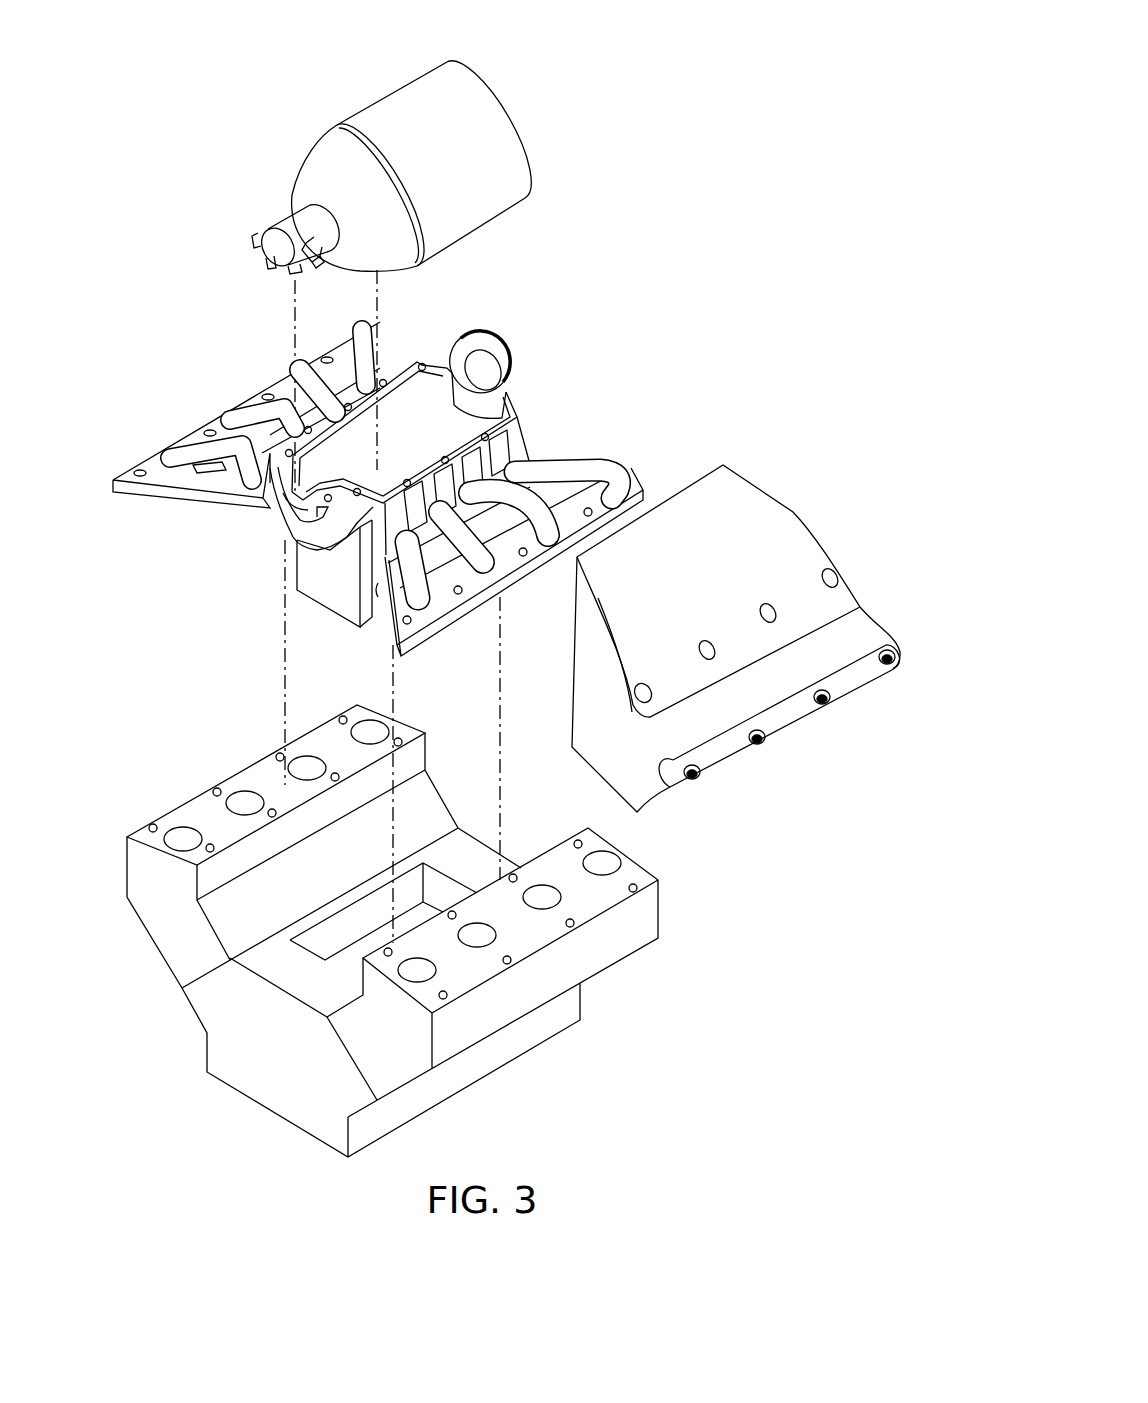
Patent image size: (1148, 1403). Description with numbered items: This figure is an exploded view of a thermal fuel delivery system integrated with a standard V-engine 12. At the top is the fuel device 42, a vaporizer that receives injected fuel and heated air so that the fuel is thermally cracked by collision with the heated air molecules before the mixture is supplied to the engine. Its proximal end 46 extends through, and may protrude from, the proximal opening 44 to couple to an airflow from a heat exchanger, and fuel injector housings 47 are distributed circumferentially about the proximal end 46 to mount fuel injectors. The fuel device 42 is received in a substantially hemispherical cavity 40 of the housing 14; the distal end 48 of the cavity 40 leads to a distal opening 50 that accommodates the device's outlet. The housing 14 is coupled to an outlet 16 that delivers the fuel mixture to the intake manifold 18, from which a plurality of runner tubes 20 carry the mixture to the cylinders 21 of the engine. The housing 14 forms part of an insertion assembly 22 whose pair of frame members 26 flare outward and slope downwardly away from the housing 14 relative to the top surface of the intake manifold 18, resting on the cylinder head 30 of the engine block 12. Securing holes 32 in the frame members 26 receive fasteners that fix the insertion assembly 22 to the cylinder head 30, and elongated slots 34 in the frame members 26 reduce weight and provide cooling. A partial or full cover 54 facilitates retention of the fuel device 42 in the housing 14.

The V-engine 12 is at (426, 931).
The housing 14 is at (396, 428).
The outlet 16 is at (511, 375).
The intake manifold 18 is at (330, 612).
The runner tubes 20 is at (608, 480).
The cylinders 21 is at (483, 940).
The insertion assembly 22 is at (378, 483).
The frame members 26 is at (378, 503).
The cylinder head 30 is at (578, 907).
The securing holes 32 is at (208, 428).
The elongated slots 34 is at (565, 490).
The cavity 40 is at (499, 356).
The fuel device 42 is at (403, 83).
The proximal opening 44 is at (272, 507).
The proximal end 46 is at (275, 235).
The fuel injector housings 47 is at (313, 263).
The distal end 48 is at (480, 349).
The distal opening 50 is at (425, 375).
The cover 54 is at (817, 550).